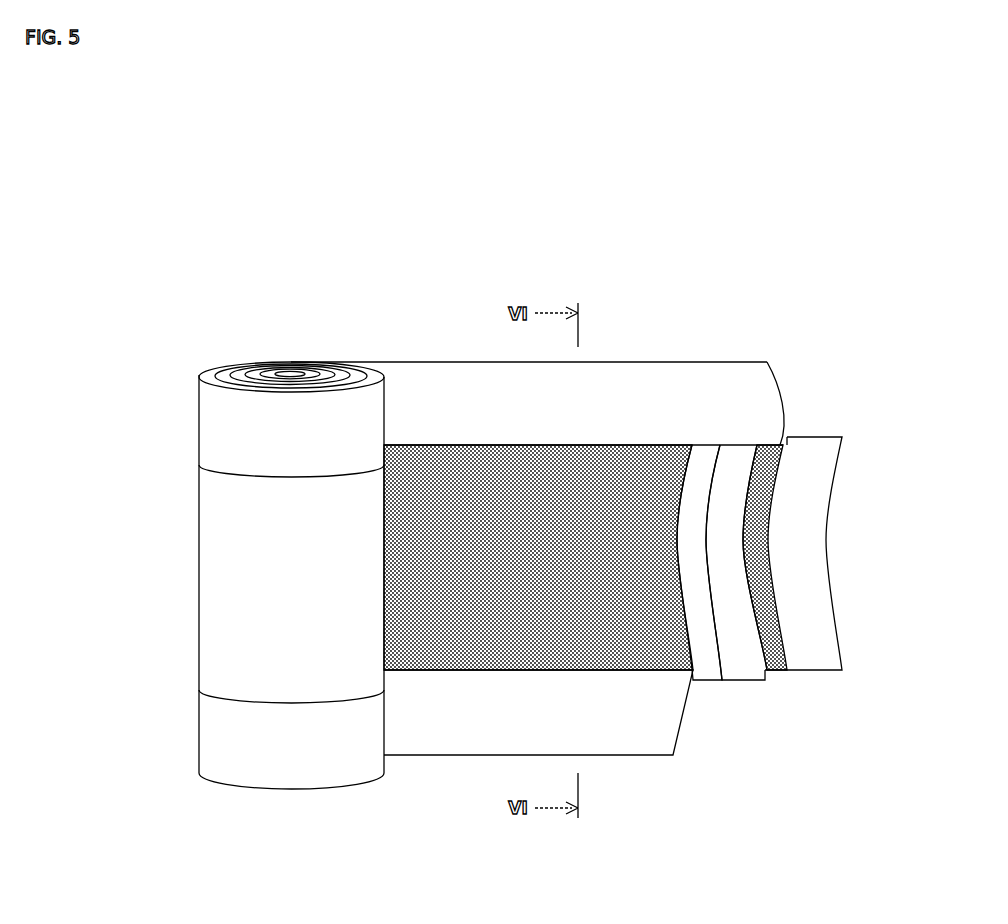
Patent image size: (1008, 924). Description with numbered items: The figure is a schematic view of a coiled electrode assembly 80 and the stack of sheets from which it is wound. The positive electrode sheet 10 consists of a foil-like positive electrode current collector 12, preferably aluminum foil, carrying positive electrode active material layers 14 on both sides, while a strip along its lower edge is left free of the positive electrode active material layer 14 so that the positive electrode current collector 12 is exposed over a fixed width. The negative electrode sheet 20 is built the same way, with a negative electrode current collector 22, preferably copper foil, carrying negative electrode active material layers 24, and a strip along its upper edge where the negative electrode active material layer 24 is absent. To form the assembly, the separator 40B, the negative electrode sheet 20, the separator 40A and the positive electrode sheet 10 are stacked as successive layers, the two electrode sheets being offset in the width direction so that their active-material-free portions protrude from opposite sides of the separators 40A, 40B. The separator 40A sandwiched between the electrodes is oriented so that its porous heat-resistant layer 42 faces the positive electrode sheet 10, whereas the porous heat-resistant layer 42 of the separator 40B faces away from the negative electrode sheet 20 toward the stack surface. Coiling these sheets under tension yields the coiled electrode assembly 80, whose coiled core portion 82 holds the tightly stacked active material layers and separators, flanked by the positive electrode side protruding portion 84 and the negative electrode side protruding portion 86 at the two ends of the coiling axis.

The coiled electrode assembly 80 is at (249, 530).
The negative electrode side protruding portion 86 is at (222, 441).
The coiled core portion 82 is at (222, 570).
The positive electrode side protruding portion 84 is at (222, 735).
The negative electrode sheet 20 is at (563, 468).
The negative electrode current collector 22 is at (630, 375).
The negative electrode active material layer 24 is at (775, 452).
The positive electrode sheet 10 is at (536, 647).
The positive electrode current collector 12 is at (492, 740).
The positive electrode active material layer 14 is at (638, 650).
The porous heat-resistant layer 42 is at (703, 653).
The separator 40A is at (735, 460).
The separator 40B is at (822, 450).